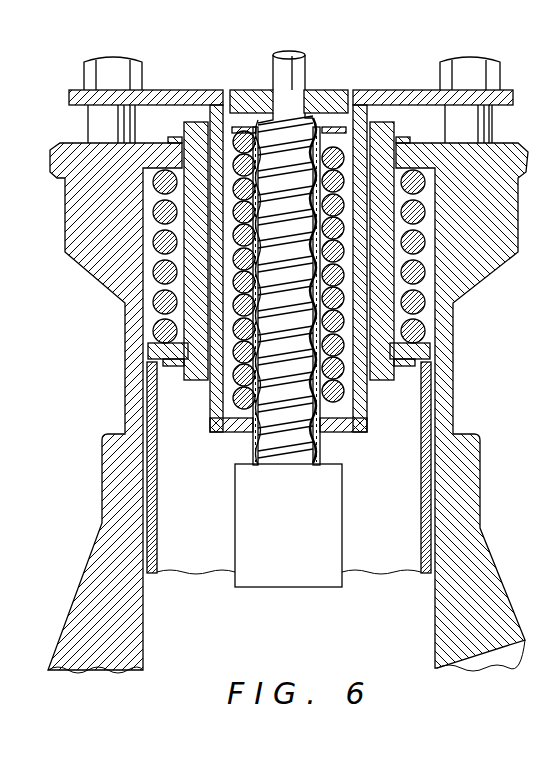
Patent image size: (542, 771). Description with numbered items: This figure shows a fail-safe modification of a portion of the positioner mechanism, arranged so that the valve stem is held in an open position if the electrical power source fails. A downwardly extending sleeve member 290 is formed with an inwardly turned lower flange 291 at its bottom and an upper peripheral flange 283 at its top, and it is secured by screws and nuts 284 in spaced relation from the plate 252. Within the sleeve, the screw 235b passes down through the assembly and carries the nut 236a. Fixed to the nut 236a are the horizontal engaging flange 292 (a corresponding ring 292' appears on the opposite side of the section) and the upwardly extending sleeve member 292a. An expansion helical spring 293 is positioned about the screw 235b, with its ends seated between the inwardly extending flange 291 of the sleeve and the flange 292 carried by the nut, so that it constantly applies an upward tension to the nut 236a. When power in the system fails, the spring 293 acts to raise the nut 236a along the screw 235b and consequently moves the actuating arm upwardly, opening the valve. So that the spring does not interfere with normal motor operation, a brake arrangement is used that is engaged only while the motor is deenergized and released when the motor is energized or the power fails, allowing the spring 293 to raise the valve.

The plate 252 is at (60, 143).
The upper peripheral flange 283 is at (417, 88).
The screws and nuts 284 is at (100, 55).
The downwardly extending sleeve member 290 is at (370, 402).
The inwardly turned lower flange 291 is at (343, 437).
The horizontal engaging flange 292 is at (280, 84).
The retaining ring 292' is at (331, 75).
The upwardly extending sleeve member 292a is at (272, 385).
The expansion helical spring 293 is at (211, 398).
The screw 235b is at (302, 222).
The nut 236a is at (297, 520).